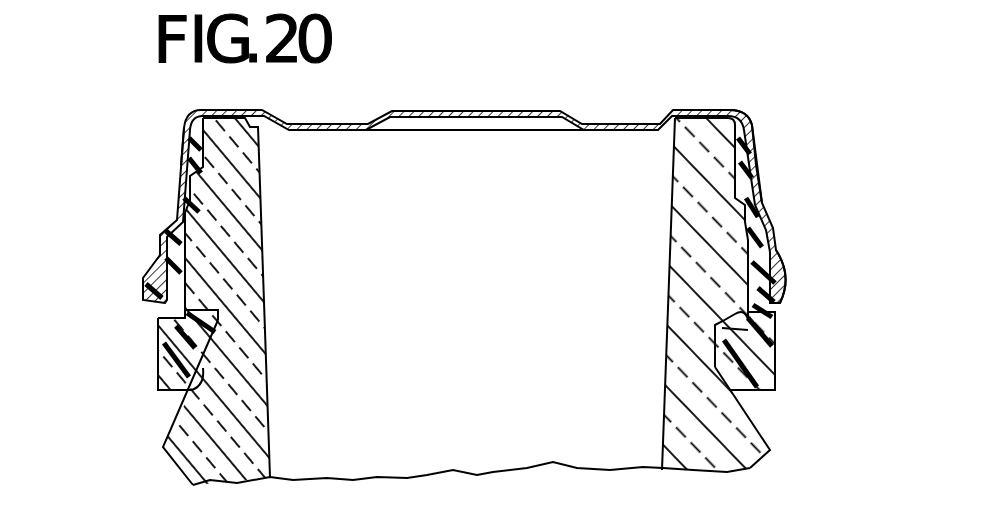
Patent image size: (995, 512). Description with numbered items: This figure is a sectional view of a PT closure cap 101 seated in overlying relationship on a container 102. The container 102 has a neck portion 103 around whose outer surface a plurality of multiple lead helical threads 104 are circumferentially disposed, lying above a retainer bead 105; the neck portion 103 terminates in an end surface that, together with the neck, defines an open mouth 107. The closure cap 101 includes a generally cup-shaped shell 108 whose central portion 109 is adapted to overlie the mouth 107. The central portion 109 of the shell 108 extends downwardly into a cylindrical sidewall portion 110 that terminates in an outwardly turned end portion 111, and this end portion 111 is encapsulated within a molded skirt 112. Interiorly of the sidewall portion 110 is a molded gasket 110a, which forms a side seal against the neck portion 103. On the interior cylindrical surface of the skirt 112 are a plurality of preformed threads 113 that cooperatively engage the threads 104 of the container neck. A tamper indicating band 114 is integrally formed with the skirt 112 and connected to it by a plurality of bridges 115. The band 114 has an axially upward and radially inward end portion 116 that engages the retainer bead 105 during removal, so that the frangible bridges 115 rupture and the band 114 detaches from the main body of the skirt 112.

The PT closure cap 101 is at (795, 116).
The container 102 is at (155, 430).
The neck portion 103 is at (185, 170).
The multiple lead helical threads 104 is at (185, 193).
The retainer bead 105 is at (187, 285).
The open mouth 107 is at (668, 172).
The cup-shaped shell 108 is at (738, 112).
The central portion 109 is at (690, 92).
The cylindrical sidewall portion 110 is at (757, 196).
The molded gasket 110a is at (185, 147).
The outwardly turned end portion 111 is at (792, 297).
The molded skirt 112 is at (160, 292).
The preformed threads 113 is at (178, 210).
The tamper indicating band 114 is at (180, 358).
The bridges 115 is at (160, 314).
The end portion 116 is at (200, 373).